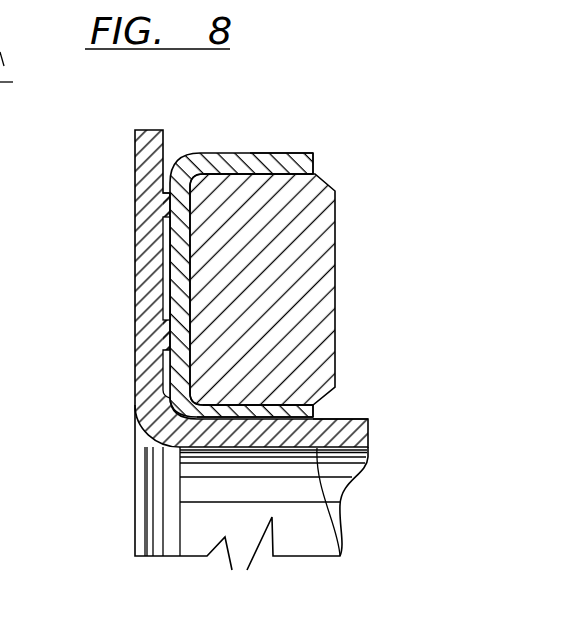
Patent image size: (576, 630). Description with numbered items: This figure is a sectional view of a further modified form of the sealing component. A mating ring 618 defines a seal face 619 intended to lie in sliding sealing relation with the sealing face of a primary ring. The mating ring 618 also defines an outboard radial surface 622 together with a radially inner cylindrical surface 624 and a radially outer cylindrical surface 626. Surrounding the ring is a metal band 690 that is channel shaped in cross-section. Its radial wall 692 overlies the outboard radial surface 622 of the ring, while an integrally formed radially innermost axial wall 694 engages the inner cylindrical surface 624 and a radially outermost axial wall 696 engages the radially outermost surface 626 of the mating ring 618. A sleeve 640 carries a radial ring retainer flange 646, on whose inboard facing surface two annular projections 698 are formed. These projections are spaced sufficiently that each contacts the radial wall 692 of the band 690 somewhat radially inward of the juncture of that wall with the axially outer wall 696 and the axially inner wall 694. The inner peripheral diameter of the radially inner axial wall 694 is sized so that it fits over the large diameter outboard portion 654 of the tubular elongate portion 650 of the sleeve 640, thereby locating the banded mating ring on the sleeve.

The mating ring 618 is at (263, 337).
The seal face 619 is at (335, 273).
The outboard radial surface 622 is at (140, 398).
The radially inner cylindrical surface 624 is at (315, 425).
The radially outer cylindrical surface 626 is at (297, 148).
The sleeve 640 is at (347, 513).
The radial ring retainer flange 646 is at (137, 150).
The tubular elongate portion 650 is at (400, 444).
The large diameter outboard portion 654 is at (343, 537).
The metal band 690 is at (218, 148).
The radial wall 692 is at (172, 288).
The radially innermost axial wall 694 is at (237, 413).
The radially outermost axial wall 696 is at (258, 160).
The annular projections 698 is at (165, 196).